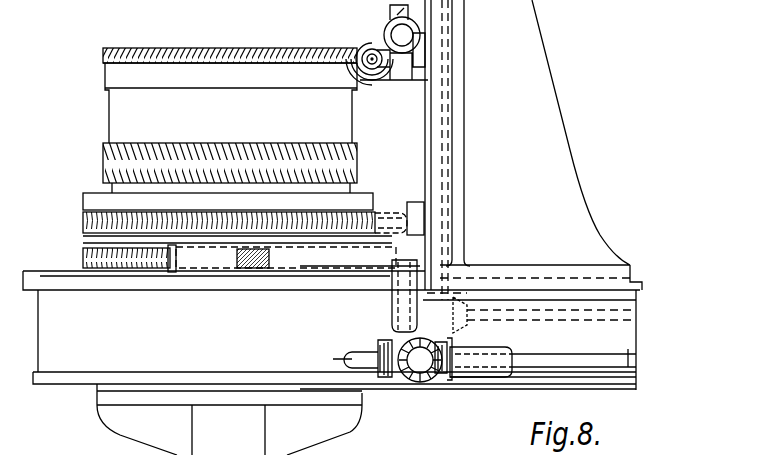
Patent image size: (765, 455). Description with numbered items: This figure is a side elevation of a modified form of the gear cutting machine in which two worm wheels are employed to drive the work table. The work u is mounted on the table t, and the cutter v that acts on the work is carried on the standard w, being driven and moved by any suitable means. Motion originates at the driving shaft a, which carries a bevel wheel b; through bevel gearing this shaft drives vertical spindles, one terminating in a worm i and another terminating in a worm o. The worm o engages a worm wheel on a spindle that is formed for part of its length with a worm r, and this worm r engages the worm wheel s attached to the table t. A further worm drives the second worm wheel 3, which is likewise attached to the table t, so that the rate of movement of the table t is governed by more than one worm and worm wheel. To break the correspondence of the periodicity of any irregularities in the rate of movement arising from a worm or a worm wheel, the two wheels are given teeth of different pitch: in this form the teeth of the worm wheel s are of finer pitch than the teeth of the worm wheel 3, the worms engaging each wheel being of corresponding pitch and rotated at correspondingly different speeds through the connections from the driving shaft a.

The work u is at (346, 118).
The cutter v is at (365, 47).
The table t is at (371, 199).
The worm wheel 3 is at (84, 222).
The worm wheel s is at (86, 259).
The worm r is at (258, 284).
The worm i is at (440, 218).
The worm o is at (455, 262).
The standard w is at (541, 145).
The driving shaft a is at (603, 363).
The bevel wheel b is at (440, 378).